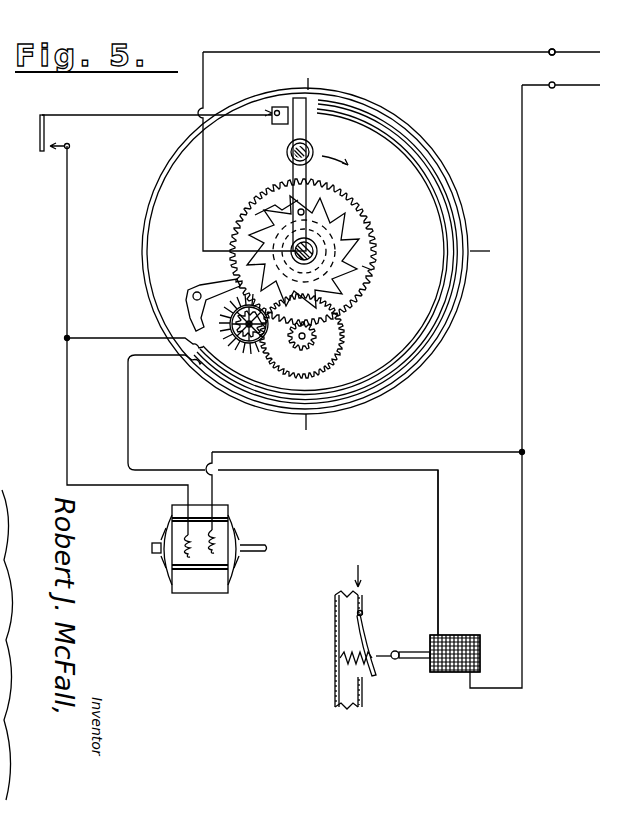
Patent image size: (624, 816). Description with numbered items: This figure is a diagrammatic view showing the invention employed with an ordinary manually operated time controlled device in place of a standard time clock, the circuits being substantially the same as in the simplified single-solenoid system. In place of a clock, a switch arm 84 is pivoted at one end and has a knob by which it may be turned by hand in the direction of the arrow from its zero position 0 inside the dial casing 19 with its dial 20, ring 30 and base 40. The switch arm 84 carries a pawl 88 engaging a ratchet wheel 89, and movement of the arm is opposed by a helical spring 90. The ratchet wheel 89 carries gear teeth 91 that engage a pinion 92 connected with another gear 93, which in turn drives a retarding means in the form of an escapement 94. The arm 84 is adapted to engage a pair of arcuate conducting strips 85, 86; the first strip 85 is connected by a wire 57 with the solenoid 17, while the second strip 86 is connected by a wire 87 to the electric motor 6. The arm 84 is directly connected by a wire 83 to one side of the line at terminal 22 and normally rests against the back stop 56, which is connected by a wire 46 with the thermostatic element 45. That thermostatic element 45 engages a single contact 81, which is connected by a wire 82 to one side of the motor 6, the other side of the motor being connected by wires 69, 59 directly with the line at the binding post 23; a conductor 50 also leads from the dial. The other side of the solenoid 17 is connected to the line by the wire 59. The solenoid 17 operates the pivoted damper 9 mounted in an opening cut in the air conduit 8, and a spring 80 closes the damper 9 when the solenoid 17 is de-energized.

The zero position mark 0 is at (307, 73).
The electric motor 6 is at (176, 575).
The air conduit 8 is at (335, 614).
The pivoted damper 9 is at (370, 643).
The solenoid 17 is at (462, 640).
The dial casing 19 is at (421, 140).
The dial 20 is at (488, 252).
The terminal 22 is at (554, 49).
The binding post 23 is at (551, 88).
The dial ring 30 is at (420, 362).
The dial base 40 is at (302, 431).
The thermostatic element 45 is at (38, 138).
The wire 46 is at (156, 118).
The conductor 50 is at (188, 371).
The back contact 56 is at (275, 127).
The wire 57 is at (420, 478).
The wire 59 is at (522, 512).
The wire 69 is at (432, 452).
The spring 80 is at (346, 666).
The contact 81 is at (52, 152).
The wire 82 is at (68, 245).
The wire 83 is at (404, 52).
The switch arm 84 is at (307, 132).
The arcuate conducting strip 85 is at (432, 164).
The arcuate conducting strip 86 is at (443, 198).
The wire 87 is at (100, 337).
The pawl 88 is at (254, 210).
The ratchet wheel 89 is at (360, 246).
The helical spring 90 is at (321, 252).
The gear teeth 91 is at (381, 267).
The pinion 92 is at (330, 356).
The gear 93 is at (335, 334).
The escapement 94 is at (210, 288).